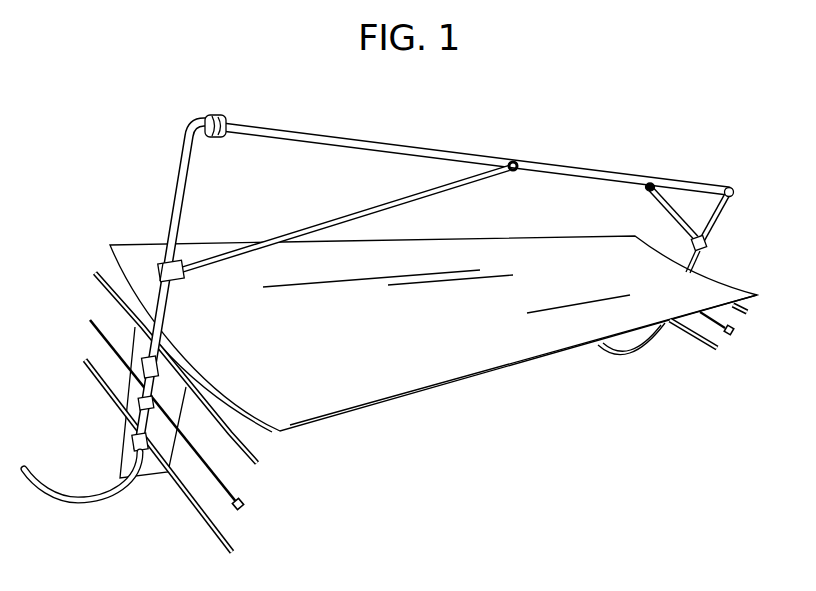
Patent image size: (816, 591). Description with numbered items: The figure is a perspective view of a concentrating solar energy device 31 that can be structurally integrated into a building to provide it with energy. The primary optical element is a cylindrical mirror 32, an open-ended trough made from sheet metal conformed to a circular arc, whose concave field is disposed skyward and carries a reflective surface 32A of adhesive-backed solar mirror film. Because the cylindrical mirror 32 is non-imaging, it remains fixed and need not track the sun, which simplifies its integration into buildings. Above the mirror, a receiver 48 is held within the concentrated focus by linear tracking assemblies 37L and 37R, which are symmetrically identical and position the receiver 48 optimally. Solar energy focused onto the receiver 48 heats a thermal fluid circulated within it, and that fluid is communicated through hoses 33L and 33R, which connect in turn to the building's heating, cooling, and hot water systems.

The concentrating solar energy device 31 is at (96, 147).
The cylindrical mirror 32 is at (356, 352).
The reflective surface 32A is at (453, 342).
The hose 33L is at (117, 492).
The hose 33R is at (632, 356).
The linear tracking assembly 37L is at (300, 501).
The linear tracking assembly 37R is at (695, 365).
The receiver 48 is at (492, 120).